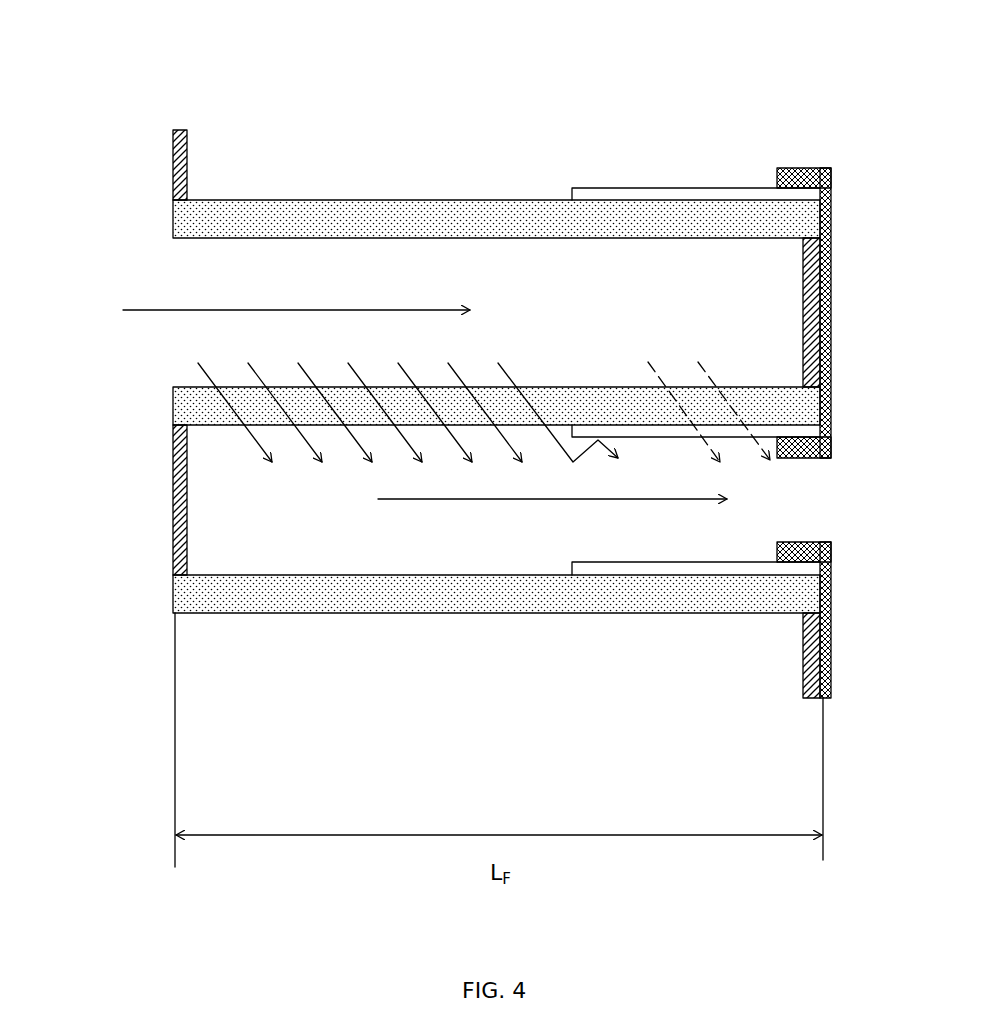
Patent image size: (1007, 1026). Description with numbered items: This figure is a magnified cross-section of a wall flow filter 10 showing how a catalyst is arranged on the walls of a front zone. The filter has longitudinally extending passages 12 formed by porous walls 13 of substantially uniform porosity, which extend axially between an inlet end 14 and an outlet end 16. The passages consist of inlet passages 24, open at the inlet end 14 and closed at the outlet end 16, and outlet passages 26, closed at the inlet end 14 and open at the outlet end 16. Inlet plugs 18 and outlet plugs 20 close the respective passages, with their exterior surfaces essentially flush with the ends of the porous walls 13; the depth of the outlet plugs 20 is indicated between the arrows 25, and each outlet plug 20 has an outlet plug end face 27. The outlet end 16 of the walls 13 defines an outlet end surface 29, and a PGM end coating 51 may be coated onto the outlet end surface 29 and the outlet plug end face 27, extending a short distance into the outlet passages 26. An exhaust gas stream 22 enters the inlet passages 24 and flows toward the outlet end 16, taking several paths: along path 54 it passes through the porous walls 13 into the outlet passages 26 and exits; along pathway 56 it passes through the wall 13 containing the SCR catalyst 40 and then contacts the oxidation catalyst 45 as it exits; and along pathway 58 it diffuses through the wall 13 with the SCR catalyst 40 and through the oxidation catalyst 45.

The wall flow filter 10 is at (323, 84).
The longitudinally extending passages 12 is at (218, 343).
The porous walls 13 is at (325, 200).
The inlet end 14 is at (90, 277).
The outlet end 16 is at (874, 237).
The inlet plugs 18 is at (173, 142).
The outlet plugs 20 is at (803, 277).
The exhaust gas stream 22 is at (157, 311).
The inlet passages 24 is at (473, 268).
The arrows indicating outlet plug depth 25 is at (805, 683).
The outlet passages 26 is at (473, 320).
The outlet plug end face 27 is at (832, 282).
The outlet end surface 29 is at (820, 218).
The SCR catalyst 40 is at (485, 215).
The oxidation catalyst 45 is at (740, 194).
The PGM end coating 51 is at (813, 168).
The flow path through porous walls 54 is at (307, 442).
The flow pathway contacting oxidation catalyst 56 is at (574, 424).
The alternative diffusion pathway 58 is at (755, 450).